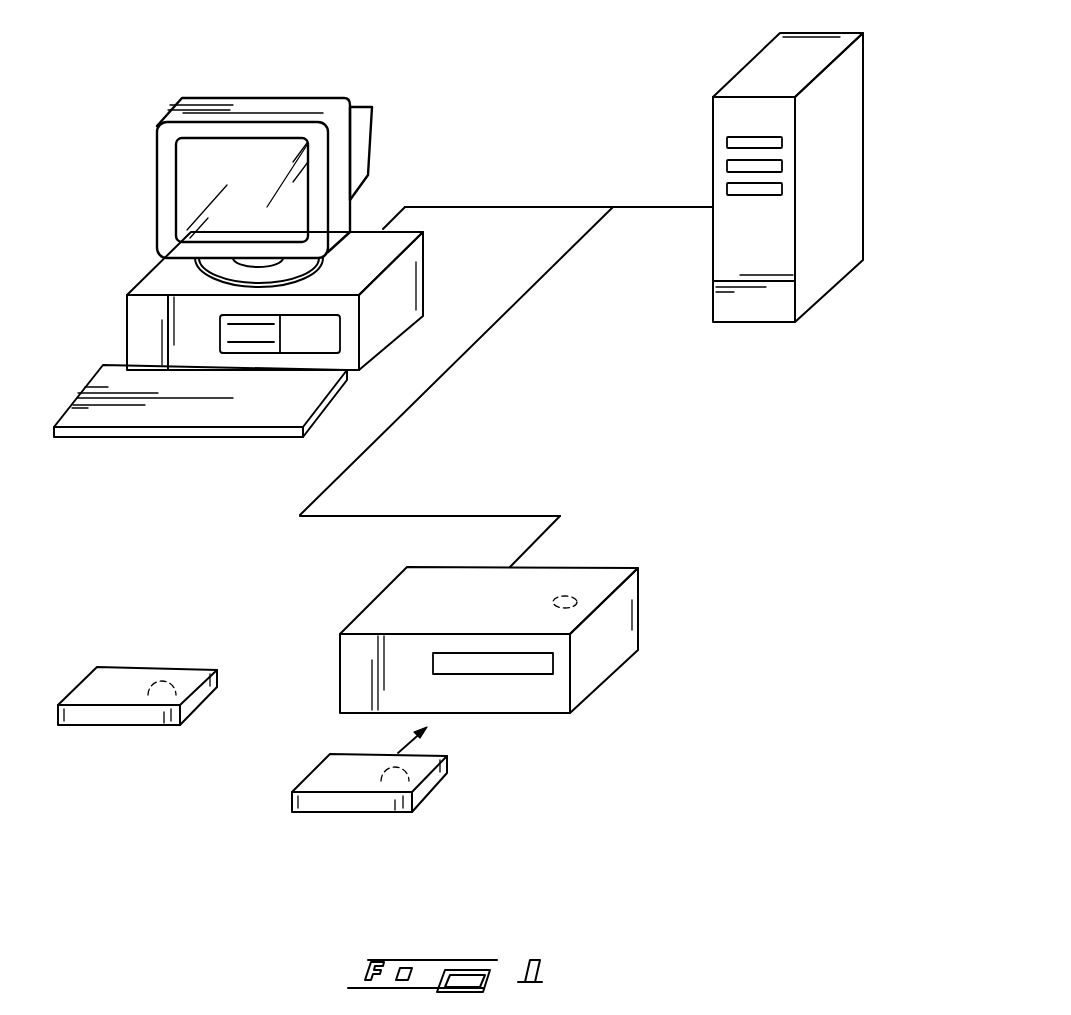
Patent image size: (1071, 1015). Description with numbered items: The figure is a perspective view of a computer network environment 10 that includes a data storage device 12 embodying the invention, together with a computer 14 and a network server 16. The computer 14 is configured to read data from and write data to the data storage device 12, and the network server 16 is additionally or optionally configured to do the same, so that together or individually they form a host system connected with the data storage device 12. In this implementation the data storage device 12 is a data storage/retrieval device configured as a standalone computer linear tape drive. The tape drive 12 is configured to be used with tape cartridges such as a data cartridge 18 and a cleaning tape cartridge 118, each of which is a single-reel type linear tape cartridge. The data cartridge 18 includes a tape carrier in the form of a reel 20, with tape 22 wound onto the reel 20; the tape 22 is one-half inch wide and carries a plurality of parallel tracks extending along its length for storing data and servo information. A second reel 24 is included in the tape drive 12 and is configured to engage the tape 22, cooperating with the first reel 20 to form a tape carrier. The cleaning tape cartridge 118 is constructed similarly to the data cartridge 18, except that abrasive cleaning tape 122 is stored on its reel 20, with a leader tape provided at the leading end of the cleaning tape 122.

The computer network environment 10 is at (808, 667).
The data storage device 12 is at (392, 603).
The computer 14 is at (157, 282).
The network server 16 is at (763, 77).
The data cartridge 18 is at (427, 795).
The reel 20 is at (385, 818).
The tape 22 is at (450, 770).
The second reel 24 is at (577, 595).
The cleaning tape cartridge 118 is at (197, 707).
The abrasive cleaning tape 122 is at (222, 683).